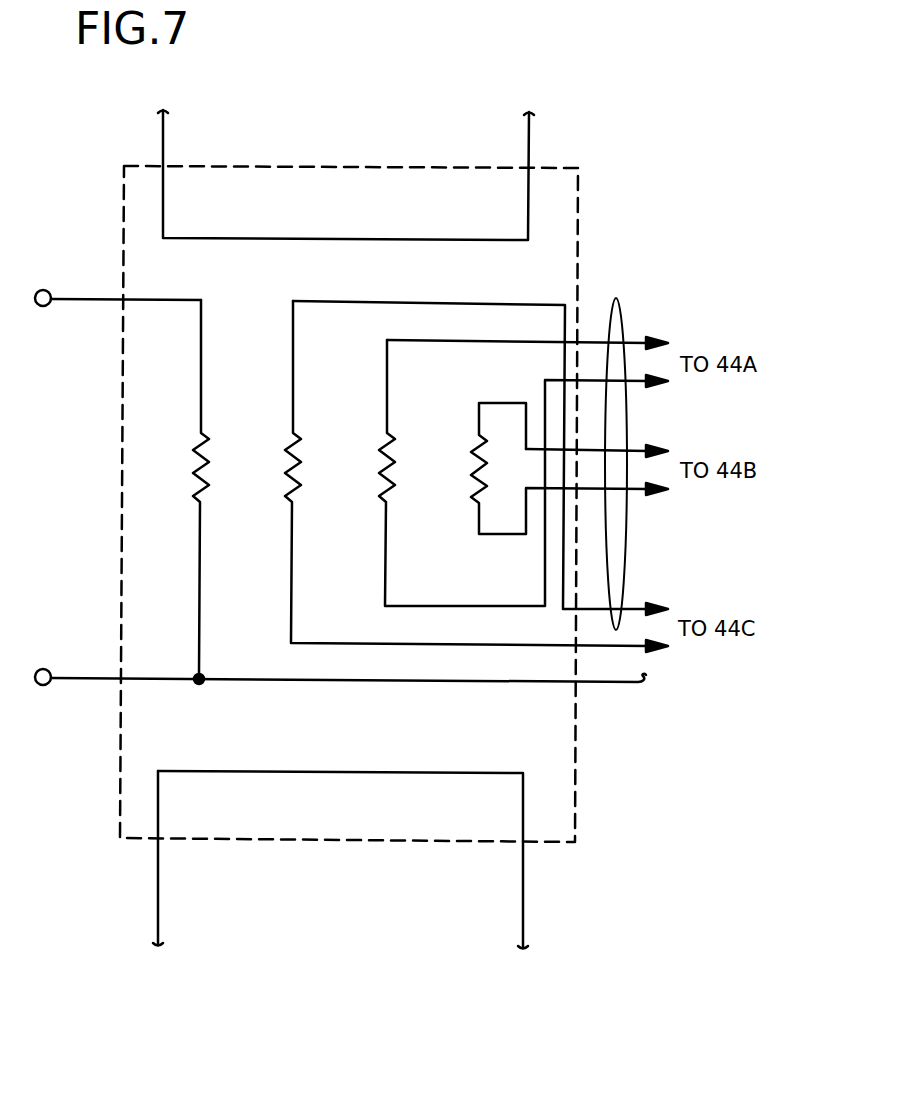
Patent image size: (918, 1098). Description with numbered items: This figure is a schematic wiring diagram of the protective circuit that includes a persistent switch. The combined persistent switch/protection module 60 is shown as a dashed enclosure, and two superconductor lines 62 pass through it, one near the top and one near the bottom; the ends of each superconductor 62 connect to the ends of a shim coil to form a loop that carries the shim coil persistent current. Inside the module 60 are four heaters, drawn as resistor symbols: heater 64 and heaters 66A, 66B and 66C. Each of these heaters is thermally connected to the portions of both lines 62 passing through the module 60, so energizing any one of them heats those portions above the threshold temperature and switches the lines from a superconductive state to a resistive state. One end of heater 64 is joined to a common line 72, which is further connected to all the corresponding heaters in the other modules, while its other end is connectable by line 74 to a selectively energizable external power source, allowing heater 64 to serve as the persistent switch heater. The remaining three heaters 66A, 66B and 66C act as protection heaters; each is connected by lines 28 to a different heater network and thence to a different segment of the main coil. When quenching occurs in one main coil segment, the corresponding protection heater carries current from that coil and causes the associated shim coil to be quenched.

The lines 28 is at (616, 298).
The combined persistent switch/protection module 60 is at (345, 166).
The superconductor 62 is at (165, 138).
The heater 64 is at (196, 466).
The heater 66A is at (382, 468).
The heater 66B is at (476, 466).
The heater 66C is at (288, 466).
The common line 72 is at (98, 678).
The line 74 is at (100, 298).